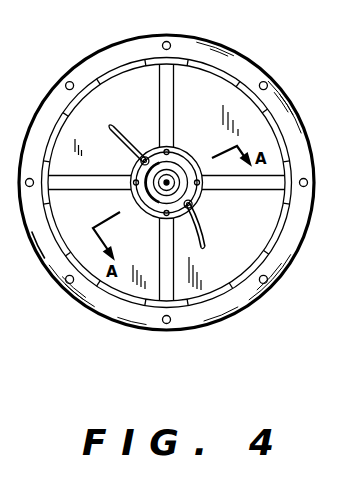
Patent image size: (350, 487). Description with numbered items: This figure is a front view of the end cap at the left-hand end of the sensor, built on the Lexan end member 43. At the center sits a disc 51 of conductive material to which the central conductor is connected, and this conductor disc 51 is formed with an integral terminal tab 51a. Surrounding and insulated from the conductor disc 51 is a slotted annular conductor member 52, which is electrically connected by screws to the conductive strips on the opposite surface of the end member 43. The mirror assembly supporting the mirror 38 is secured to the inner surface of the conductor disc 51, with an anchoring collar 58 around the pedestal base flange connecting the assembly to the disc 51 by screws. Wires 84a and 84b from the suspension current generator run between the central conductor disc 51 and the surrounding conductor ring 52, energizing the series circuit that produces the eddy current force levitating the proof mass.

The end member 43 is at (285, 88).
The mirror 38 is at (134, 170).
The anchoring collar 58 is at (182, 151).
The slotted annular conductor member 52 is at (133, 194).
The conductor disc 51 is at (149, 214).
The terminal tab 51a is at (248, 220).
The wire 84a is at (256, 255).
The wire 84b is at (150, 111).